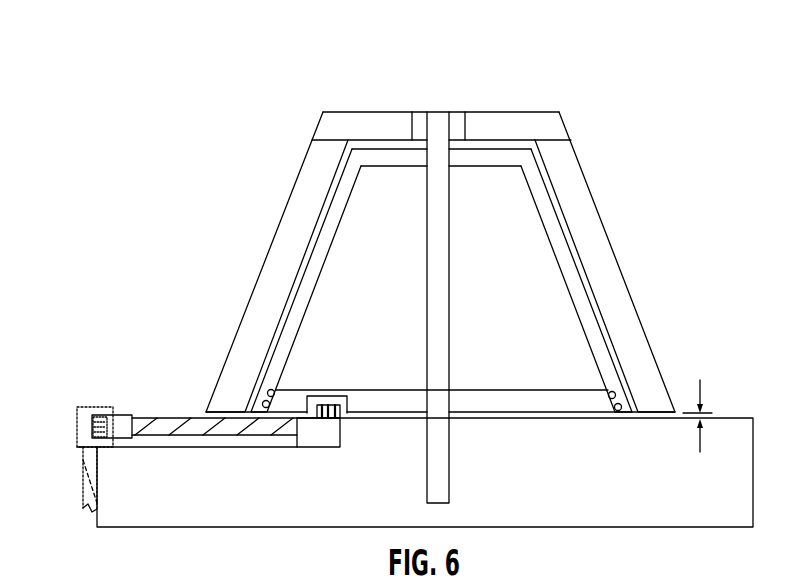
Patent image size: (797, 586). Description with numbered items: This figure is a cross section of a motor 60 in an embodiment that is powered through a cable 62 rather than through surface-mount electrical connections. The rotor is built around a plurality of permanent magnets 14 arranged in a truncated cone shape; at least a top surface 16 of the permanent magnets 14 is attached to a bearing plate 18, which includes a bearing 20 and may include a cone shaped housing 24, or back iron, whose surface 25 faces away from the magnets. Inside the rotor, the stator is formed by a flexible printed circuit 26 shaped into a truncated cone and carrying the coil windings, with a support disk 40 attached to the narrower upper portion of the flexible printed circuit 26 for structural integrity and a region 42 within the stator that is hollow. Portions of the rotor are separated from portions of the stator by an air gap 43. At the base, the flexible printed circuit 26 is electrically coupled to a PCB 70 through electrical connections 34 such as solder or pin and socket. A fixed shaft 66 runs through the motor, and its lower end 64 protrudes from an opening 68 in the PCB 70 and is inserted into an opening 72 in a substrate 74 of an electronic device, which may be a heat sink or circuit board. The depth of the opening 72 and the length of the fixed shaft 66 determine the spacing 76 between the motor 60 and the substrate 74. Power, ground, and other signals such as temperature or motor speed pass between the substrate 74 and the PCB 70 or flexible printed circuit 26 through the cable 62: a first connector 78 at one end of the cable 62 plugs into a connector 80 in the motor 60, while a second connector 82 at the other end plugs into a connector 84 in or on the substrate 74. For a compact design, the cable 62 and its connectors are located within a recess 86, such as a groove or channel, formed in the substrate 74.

The motor 60 is at (163, 212).
The bearing plate 18 is at (322, 113).
The support disk 40 is at (390, 151).
The top surface 16 is at (332, 130).
The bearing 20 is at (413, 118).
The air gap 43 is at (484, 143).
The cone shaped housing 24 is at (280, 227).
The permanent magnets 14 is at (240, 357).
The surface of the housing 25 is at (590, 152).
The flexible printed circuit 26 is at (298, 302).
The region 42 is at (388, 240).
The fixed shaft 66 is at (427, 303).
The electrical connections 34 is at (267, 392).
The PCB 70 is at (572, 400).
The spacing 76 is at (712, 416).
The connector 80 is at (330, 398).
The first connector 78 is at (320, 425).
The cable 62 is at (225, 428).
The recess 86 is at (266, 448).
The substrate 74 is at (143, 503).
The second connector 82 is at (110, 417).
The connector 84 is at (83, 427).
The lower end 64 is at (432, 503).
The opening 72 is at (415, 476).
The opening 68 is at (457, 425).